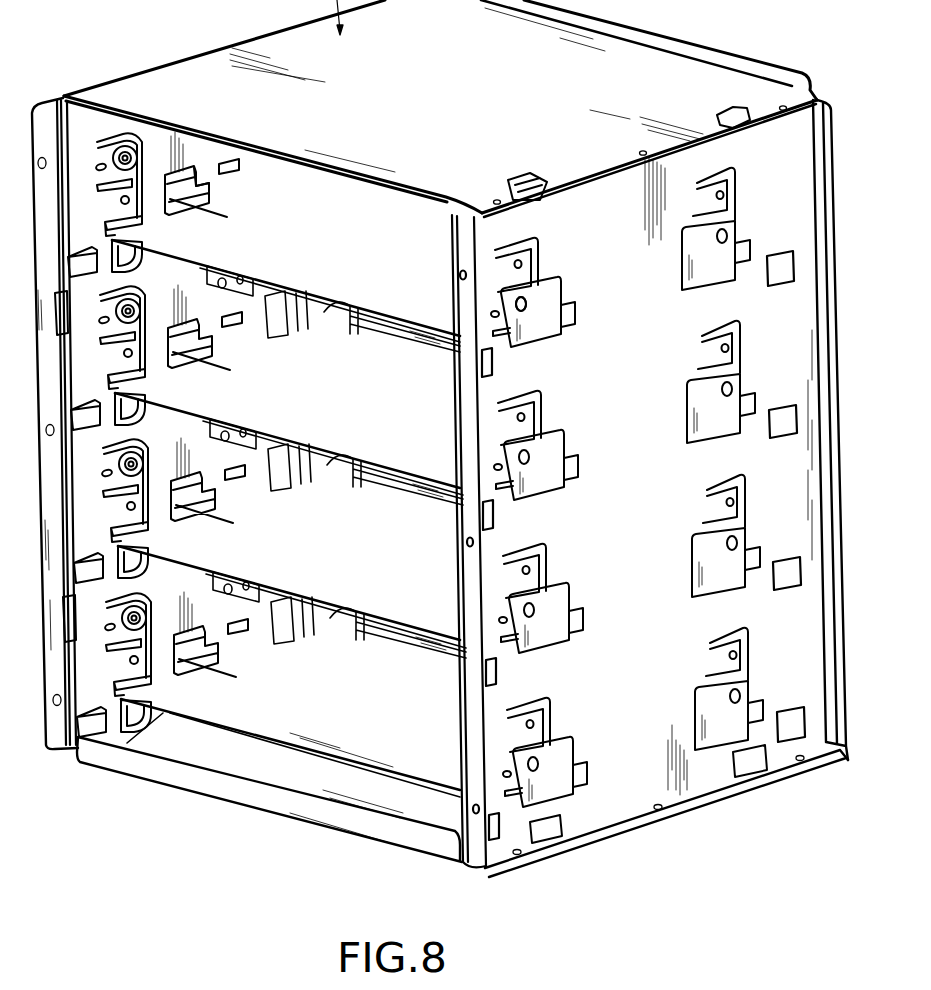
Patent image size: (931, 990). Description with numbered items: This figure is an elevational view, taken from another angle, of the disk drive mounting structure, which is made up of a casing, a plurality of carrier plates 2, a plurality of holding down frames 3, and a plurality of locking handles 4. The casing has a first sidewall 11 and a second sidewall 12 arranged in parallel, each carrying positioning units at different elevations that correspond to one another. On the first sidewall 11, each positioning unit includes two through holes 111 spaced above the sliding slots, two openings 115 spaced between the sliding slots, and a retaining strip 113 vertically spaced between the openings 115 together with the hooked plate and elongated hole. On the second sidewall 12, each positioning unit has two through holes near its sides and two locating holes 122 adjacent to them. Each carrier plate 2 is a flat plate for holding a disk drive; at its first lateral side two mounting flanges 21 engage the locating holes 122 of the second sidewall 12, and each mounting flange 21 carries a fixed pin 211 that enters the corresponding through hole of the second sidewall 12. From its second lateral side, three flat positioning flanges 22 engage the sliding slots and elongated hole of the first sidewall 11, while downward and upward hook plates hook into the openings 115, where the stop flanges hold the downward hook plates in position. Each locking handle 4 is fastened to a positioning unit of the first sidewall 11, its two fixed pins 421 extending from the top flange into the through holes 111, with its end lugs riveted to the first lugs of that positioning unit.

The carrier plate 2 is at (373, 289).
The holding down frame 3 is at (181, 186).
The locking handle 4 is at (100, 176).
The first sidewall 11 is at (71, 132).
The second sidewall 12 is at (616, 795).
The mounting flange 21 is at (548, 292).
The flat positioning flange 22 is at (112, 238).
The through hole 111 is at (65, 144).
The retaining strip 113 is at (226, 162).
The opening 115 is at (198, 176).
The locating hole 122 is at (574, 318).
The fixed pin 211 is at (524, 299).
The fixed pin 421 is at (122, 145).